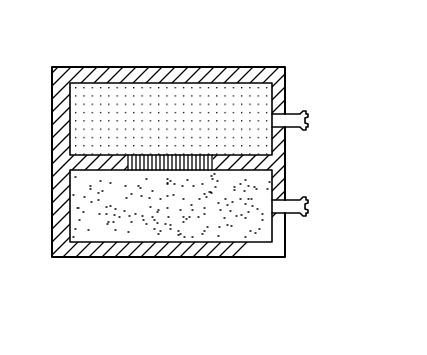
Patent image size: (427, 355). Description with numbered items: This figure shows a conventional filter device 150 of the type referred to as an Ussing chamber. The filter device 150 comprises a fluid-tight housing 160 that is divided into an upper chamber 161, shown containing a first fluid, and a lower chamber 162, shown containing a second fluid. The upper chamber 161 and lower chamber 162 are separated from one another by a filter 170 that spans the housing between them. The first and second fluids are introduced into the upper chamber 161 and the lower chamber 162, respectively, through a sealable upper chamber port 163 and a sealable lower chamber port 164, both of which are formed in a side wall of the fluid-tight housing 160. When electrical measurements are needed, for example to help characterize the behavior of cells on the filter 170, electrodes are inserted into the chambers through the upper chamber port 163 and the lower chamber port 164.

The filter device 150 is at (51, 34).
The fluid-tight housing 160 is at (221, 68).
The upper chamber 161 is at (188, 134).
The lower chamber 162 is at (188, 221).
The sealable upper chamber port 163 is at (299, 109).
The sealable lower chamber port 164 is at (299, 216).
The filter 170 is at (203, 158).